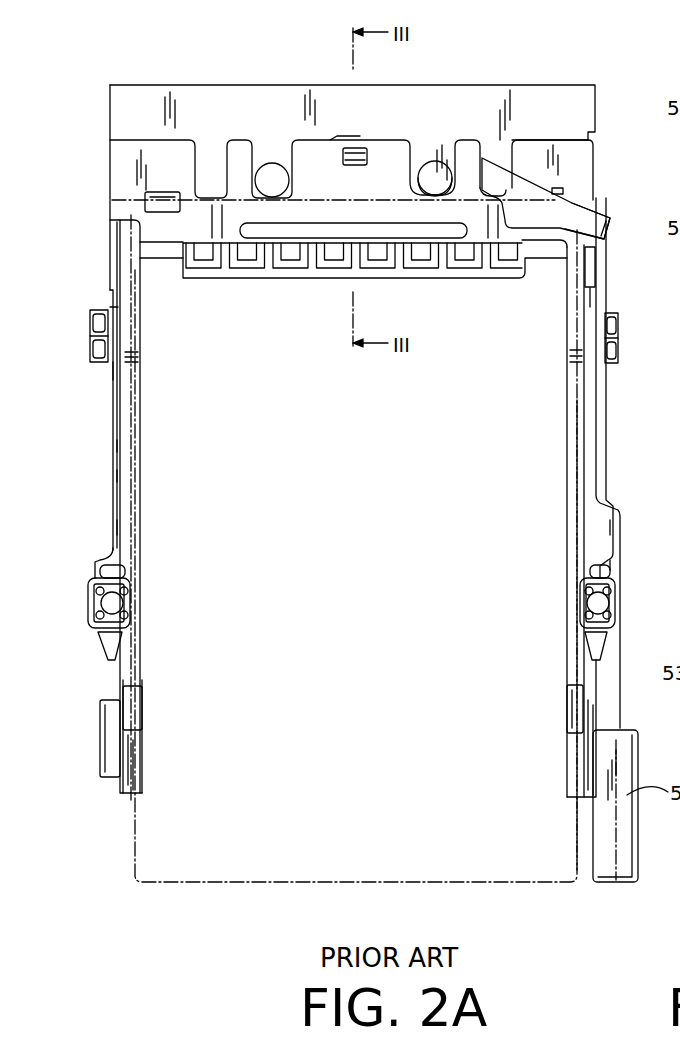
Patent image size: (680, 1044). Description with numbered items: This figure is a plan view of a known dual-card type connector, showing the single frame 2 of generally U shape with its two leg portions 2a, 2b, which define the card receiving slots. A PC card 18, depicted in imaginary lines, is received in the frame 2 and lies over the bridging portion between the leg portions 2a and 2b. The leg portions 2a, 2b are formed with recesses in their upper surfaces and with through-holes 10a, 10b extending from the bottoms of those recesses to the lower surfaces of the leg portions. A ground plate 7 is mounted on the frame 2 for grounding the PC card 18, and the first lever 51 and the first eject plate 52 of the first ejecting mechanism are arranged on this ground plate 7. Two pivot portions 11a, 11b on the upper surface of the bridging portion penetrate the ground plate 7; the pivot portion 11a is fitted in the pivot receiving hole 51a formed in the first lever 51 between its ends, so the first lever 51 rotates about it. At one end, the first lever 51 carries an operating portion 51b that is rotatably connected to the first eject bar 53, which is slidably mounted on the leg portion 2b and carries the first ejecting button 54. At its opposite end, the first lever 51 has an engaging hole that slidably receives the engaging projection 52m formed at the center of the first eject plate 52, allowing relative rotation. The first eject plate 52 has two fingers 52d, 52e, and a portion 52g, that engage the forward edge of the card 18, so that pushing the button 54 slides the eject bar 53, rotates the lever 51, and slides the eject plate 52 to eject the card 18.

The ground plate 7 is at (548, 86).
The finger 52e is at (162, 193).
The pivot portion 11a is at (265, 176).
The engaging projection 52m is at (356, 148).
The pivot portion 11b is at (435, 174).
The hook portion 52g is at (455, 158).
The finger 52d is at (558, 188).
The first eject plate 52 is at (590, 161).
The first lever 51 is at (577, 208).
The operating portion 51b is at (612, 236).
The pivot receiving hole 51a is at (441, 197).
The first eject bar 53 is at (607, 410).
The leg portion 2b is at (573, 463).
The frame 2 is at (104, 496).
The leg portion 2a is at (117, 528).
The through-hole 10a is at (95, 608).
The through-hole 10b is at (610, 606).
The first ejecting button 54 is at (636, 806).
The PC card 18 is at (318, 884).